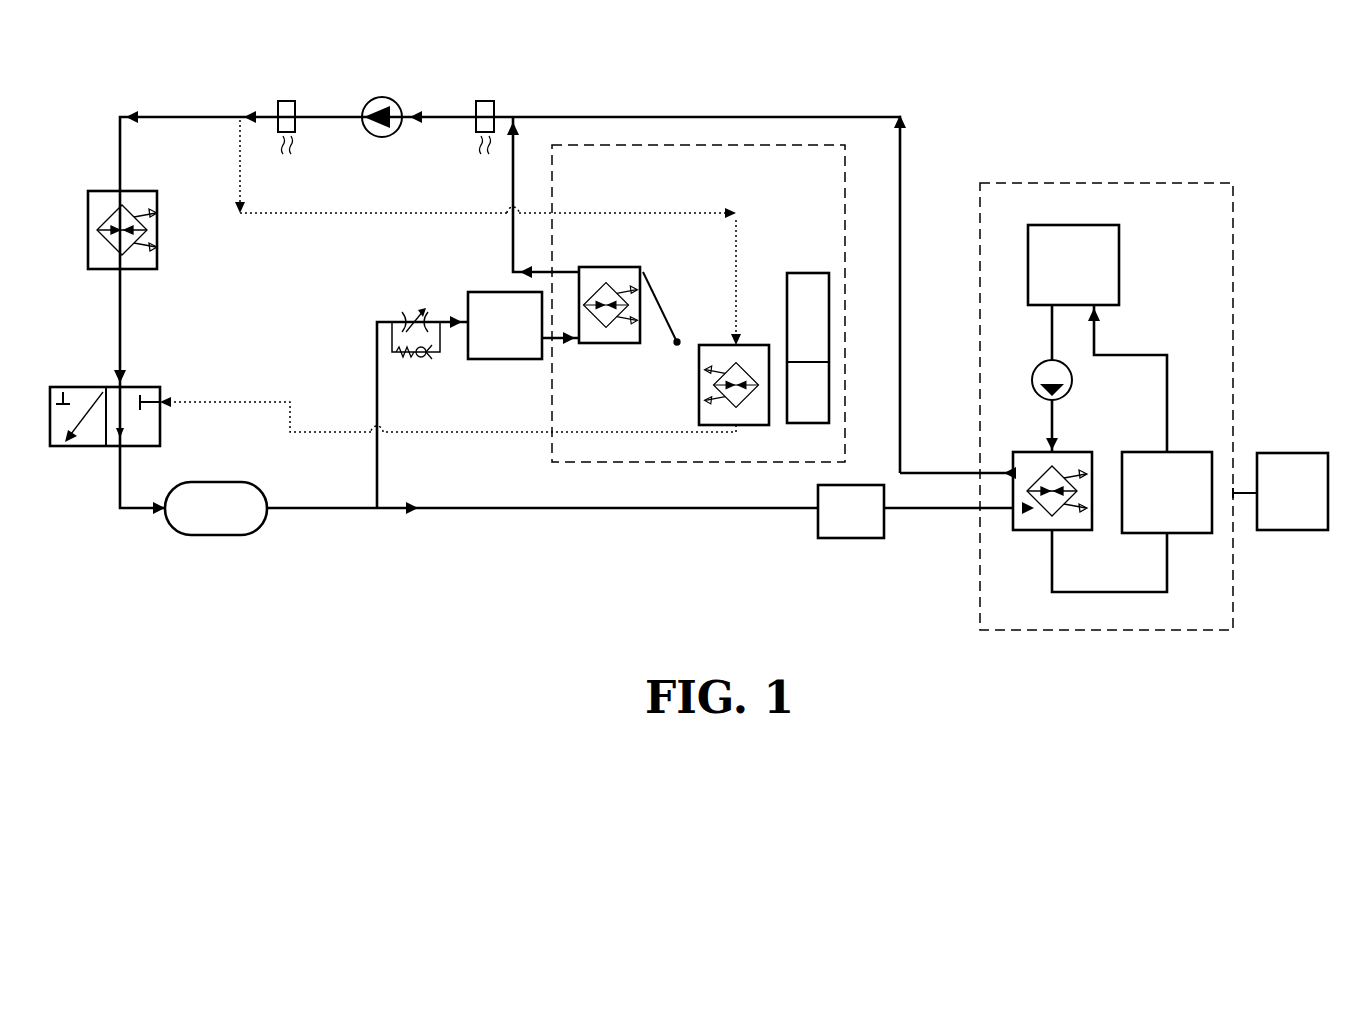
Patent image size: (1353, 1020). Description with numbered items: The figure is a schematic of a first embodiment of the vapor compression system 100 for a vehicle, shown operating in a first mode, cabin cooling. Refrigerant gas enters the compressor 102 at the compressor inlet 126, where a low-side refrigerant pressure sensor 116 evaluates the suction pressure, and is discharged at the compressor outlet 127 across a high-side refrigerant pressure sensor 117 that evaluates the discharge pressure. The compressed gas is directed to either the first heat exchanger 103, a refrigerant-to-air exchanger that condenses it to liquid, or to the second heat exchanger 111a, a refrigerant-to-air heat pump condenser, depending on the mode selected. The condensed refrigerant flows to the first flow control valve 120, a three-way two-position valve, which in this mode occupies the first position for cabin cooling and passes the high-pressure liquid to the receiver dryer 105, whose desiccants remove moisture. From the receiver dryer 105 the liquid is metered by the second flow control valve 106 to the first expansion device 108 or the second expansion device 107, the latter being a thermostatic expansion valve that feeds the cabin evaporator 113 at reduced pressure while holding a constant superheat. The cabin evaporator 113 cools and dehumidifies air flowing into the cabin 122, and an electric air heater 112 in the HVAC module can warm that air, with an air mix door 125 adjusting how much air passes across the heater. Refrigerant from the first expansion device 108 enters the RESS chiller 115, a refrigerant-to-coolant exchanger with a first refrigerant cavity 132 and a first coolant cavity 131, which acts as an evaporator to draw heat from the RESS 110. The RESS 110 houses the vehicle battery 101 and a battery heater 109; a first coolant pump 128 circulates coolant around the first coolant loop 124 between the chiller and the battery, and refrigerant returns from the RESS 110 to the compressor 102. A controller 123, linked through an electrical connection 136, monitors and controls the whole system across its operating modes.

The vapor compression system 100 is at (646, 84).
The vehicle battery 101 is at (1073, 265).
The compressor 102 is at (386, 97).
The first heat exchanger 103 is at (88, 200).
The receiver dryer 105 is at (216, 508).
The second flow control valve 106 is at (440, 346).
The second expansion device 107 is at (505, 325).
The first expansion device 108 is at (851, 511).
The battery heater 109 is at (1167, 492).
The RESS 110 is at (1130, 183).
The second heat exchanger 111a is at (769, 410).
The electric air heater 112 is at (808, 348).
The cabin evaporator 113 is at (614, 344).
The RESS chiller 115 is at (1096, 446).
The low-side refrigerant pressure sensor 116 is at (490, 101).
The high-side refrigerant pressure sensor 117 is at (283, 101).
The first flow control valve 120 is at (70, 450).
The cabin 122 is at (790, 148).
The controller 123 is at (1292, 491).
The first coolant loop 124 is at (1142, 348).
The air mix door 125 is at (660, 300).
The compressor inlet 126 is at (402, 107).
The compressor outlet 127 is at (366, 110).
The first coolant pump 128 is at (1035, 372).
The first coolant cavity 131 is at (1084, 445).
The first refrigerant cavity 132 is at (1030, 452).
The electrical connection 136 is at (1240, 502).